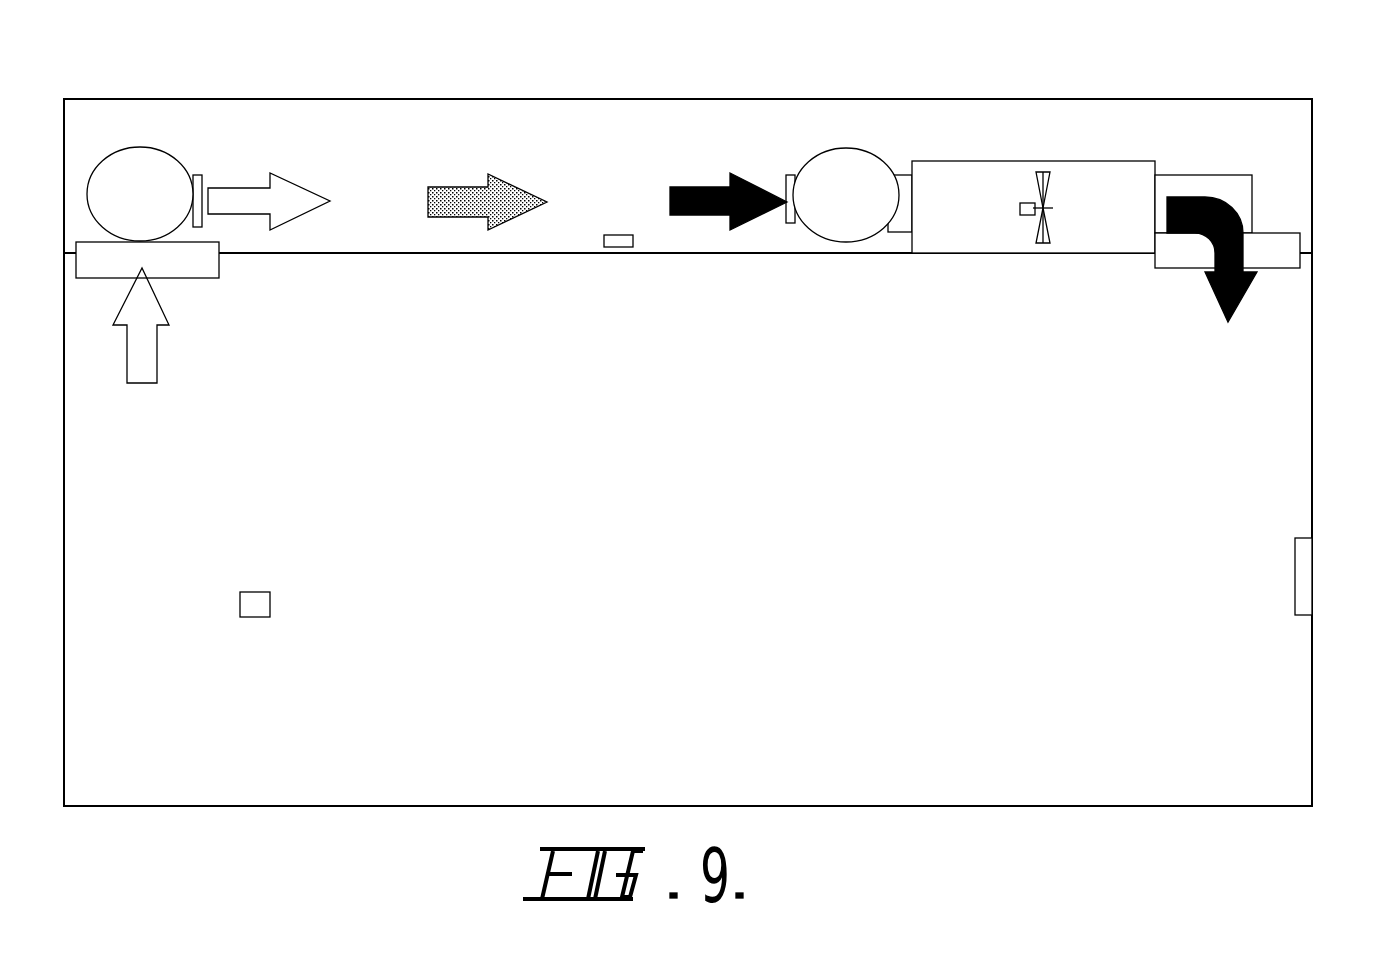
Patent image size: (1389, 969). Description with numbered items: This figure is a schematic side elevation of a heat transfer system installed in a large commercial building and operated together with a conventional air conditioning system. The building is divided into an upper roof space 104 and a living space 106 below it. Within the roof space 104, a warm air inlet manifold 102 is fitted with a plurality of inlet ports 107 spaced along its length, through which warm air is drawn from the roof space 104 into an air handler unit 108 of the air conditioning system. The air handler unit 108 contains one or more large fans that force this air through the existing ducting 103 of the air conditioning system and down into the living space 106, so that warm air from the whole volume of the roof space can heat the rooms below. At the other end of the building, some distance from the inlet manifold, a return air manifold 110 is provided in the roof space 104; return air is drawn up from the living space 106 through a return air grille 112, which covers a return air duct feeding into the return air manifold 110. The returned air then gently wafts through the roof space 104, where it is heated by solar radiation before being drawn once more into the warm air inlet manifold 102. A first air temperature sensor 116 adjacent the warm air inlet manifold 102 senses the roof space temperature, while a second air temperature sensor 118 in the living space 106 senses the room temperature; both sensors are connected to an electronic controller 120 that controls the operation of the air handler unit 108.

The warm air inlet manifold 102 is at (848, 147).
The existing ducting 103 is at (1252, 212).
The roof space 104 is at (602, 142).
The living space 106 is at (636, 557).
The inlet ports 107 is at (782, 220).
The air handler unit 108 is at (1002, 237).
The return air manifold 110 is at (119, 148).
The return air grille 112 is at (185, 278).
The first air temperature sensor 116 is at (616, 254).
The second air temperature sensor 118 is at (270, 607).
The electronic controller 120 is at (1295, 563).